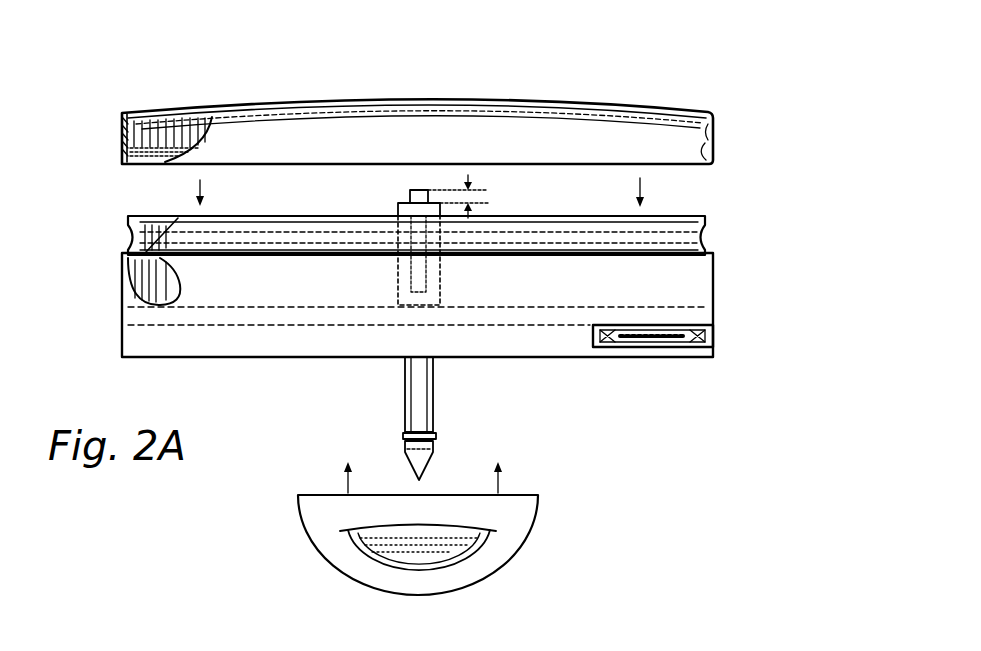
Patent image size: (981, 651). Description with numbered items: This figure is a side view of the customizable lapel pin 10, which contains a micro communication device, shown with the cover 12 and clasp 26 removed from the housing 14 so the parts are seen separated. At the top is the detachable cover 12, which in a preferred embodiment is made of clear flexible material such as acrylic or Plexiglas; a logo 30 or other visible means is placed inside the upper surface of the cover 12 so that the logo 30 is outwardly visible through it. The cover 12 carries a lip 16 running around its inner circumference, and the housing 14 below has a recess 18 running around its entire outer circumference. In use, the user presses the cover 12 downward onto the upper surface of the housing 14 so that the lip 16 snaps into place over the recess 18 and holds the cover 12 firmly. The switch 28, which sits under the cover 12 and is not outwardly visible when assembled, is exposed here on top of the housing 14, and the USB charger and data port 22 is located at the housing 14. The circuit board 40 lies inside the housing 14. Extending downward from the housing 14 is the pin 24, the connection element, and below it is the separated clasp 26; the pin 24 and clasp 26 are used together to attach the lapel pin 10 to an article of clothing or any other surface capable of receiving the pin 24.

The customizable lapel pin 10 is at (603, 44).
The detachable cover 12 is at (420, 128).
The housing 14 is at (425, 289).
The lip 16 is at (122, 152).
The recess 18 is at (134, 237).
The USB charger and data port 22 is at (680, 340).
The pin 24 is at (420, 372).
The clasp 26 is at (527, 520).
The switch 28 is at (412, 196).
The logo 30 is at (333, 93).
The circuit board 40 is at (262, 325).